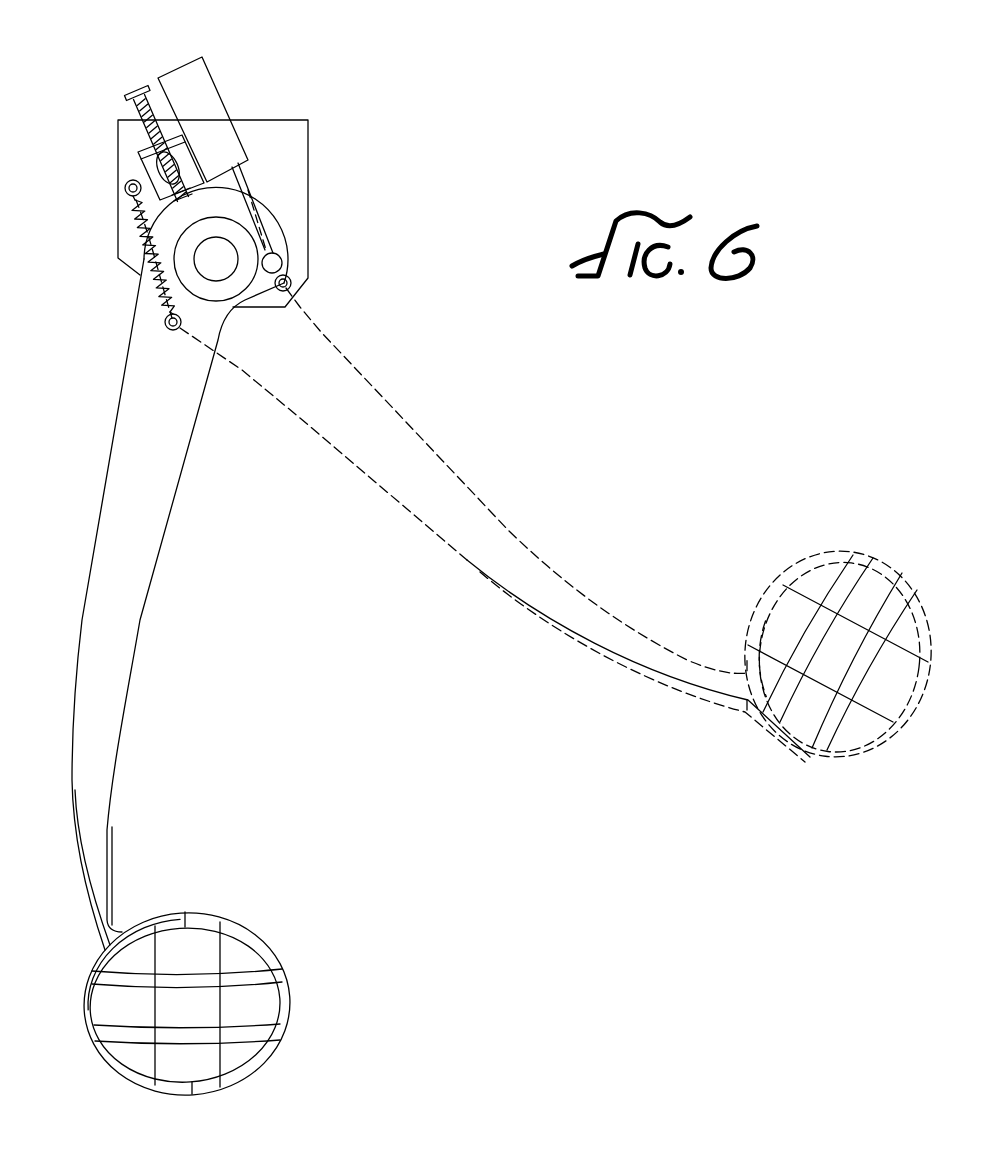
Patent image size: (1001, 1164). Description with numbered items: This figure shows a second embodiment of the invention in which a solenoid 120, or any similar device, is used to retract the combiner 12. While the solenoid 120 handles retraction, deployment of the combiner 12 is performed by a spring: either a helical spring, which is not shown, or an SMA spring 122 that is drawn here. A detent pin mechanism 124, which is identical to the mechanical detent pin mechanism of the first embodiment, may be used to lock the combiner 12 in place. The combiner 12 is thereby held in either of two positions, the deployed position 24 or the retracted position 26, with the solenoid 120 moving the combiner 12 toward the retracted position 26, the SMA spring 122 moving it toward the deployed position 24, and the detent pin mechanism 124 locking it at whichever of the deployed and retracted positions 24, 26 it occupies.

The combiner 12 is at (265, 942).
The deployed position 24 is at (512, 523).
The retracted position 26 is at (115, 837).
The solenoid 120 is at (215, 80).
The SMA spring 122 is at (132, 223).
The detent pin mechanism 124 is at (165, 168).